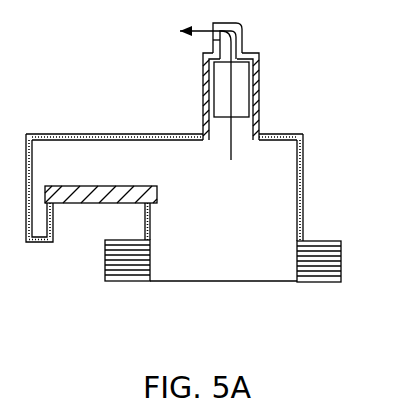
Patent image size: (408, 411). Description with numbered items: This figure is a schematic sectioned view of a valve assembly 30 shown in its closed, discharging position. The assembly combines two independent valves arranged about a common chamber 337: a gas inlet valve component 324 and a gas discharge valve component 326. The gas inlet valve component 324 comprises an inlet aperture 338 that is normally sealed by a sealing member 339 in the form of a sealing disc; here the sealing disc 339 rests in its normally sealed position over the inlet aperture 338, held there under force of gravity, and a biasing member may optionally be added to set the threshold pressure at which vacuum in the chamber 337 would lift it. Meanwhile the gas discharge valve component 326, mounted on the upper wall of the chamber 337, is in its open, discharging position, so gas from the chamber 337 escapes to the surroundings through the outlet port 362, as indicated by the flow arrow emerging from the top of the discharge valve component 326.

The dispensing device 30 is at (215, 167).
The gas discharge valve component 326 is at (180, 78).
The outlet port 362 is at (242, 51).
The sealing member 339 is at (102, 185).
The inlet aperture 338 is at (67, 203).
The gas inlet valve component 324 is at (112, 210).
The chamber 337 is at (197, 268).